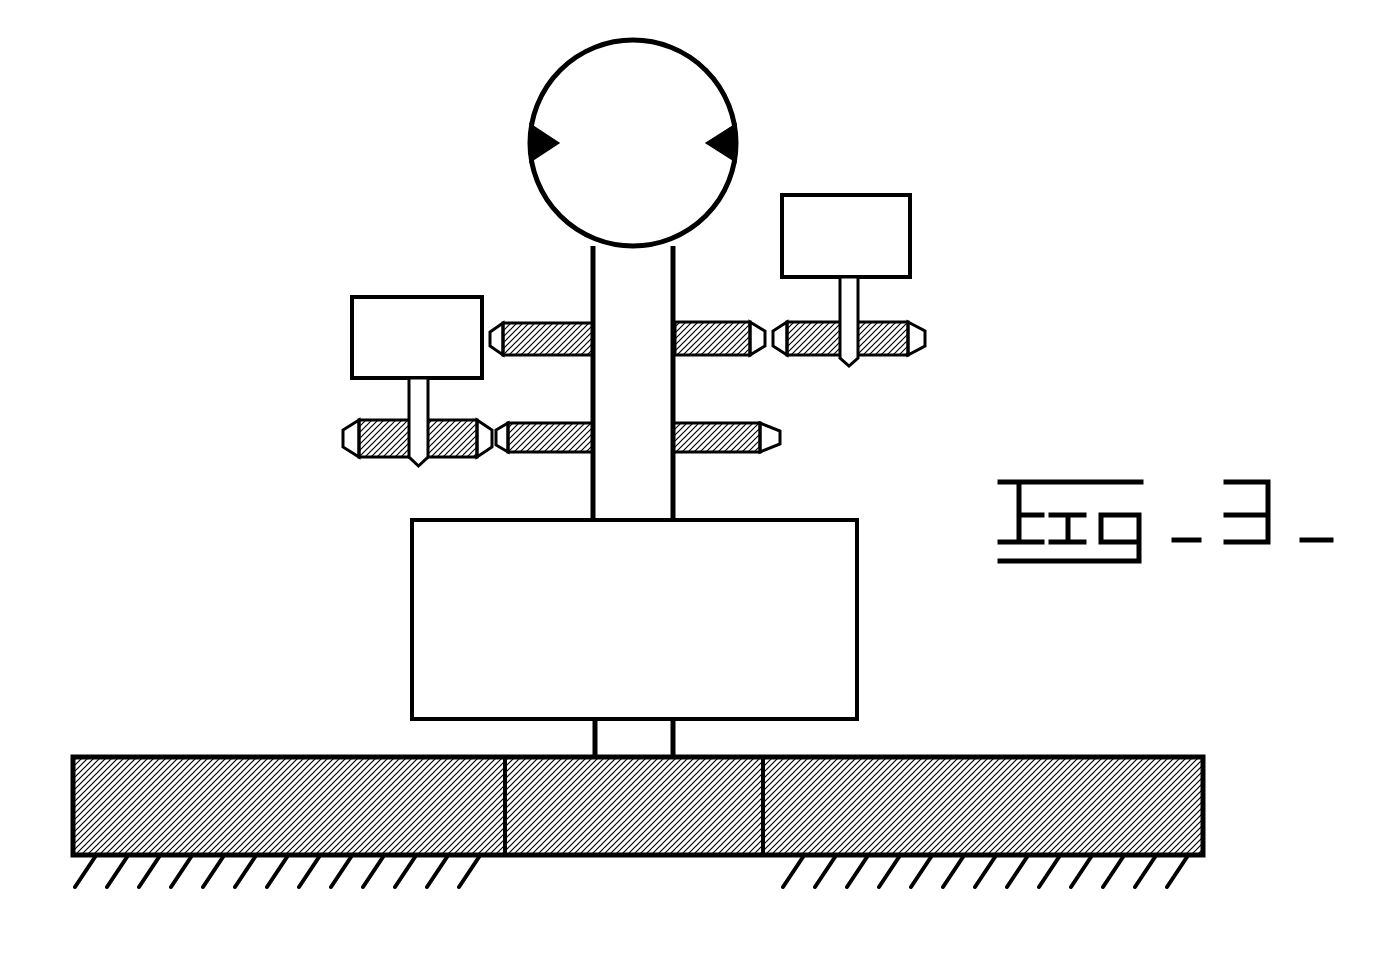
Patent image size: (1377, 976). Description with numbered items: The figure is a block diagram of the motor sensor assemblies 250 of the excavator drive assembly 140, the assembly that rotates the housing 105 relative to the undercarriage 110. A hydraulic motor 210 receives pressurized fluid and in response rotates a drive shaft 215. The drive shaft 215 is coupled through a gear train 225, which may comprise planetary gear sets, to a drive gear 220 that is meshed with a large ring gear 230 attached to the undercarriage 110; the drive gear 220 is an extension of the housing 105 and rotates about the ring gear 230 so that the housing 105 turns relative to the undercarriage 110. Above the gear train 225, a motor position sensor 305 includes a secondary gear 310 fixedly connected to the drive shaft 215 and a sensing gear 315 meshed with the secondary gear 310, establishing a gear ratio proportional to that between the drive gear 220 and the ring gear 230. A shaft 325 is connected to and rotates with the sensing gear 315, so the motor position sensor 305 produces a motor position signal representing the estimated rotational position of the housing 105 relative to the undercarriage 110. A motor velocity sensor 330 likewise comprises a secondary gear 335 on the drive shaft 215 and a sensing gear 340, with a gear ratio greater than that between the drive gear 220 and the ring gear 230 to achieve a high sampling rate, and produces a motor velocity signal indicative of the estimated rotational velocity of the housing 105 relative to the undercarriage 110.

The housing 105 is at (1131, 685).
The undercarriage 110 is at (1236, 885).
The drive assembly 140 is at (1192, 336).
The hydraulic motor 210 is at (713, 80).
The drive shaft 215 is at (633, 383).
The drive gear 220 is at (722, 758).
The gear train 225 is at (858, 535).
The large ring gear 230 is at (1203, 792).
The sensors 250 is at (667, 253).
The motor position sensor 305 is at (870, 195).
The secondary gear 310 is at (698, 316).
The sensing gear 315 is at (883, 358).
The shaft 325 is at (860, 297).
The motor velocity sensor 330 is at (375, 297).
The secondary gear 335 is at (700, 421).
The sensing gear 340 is at (375, 459).